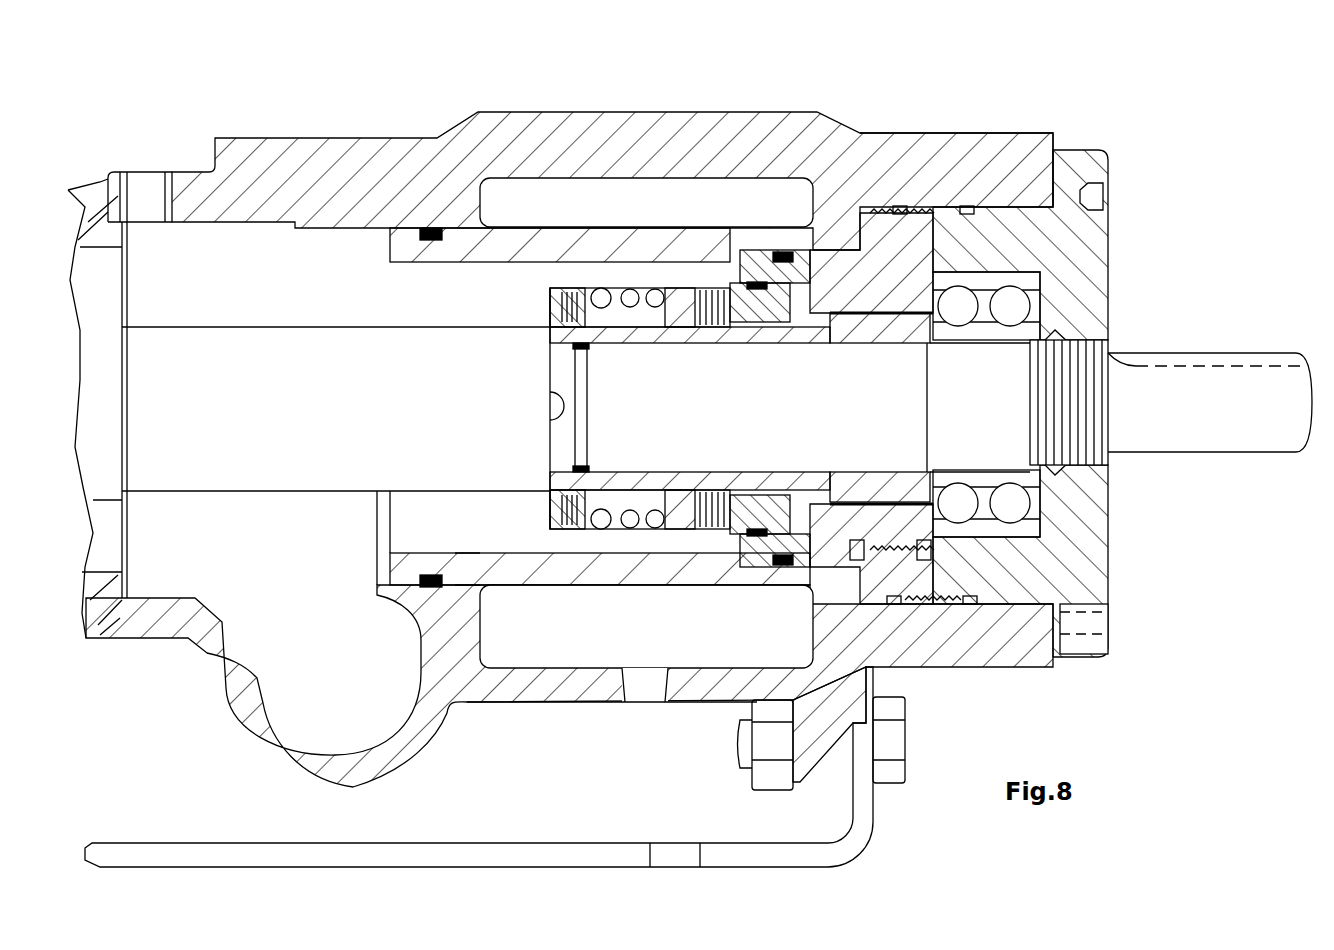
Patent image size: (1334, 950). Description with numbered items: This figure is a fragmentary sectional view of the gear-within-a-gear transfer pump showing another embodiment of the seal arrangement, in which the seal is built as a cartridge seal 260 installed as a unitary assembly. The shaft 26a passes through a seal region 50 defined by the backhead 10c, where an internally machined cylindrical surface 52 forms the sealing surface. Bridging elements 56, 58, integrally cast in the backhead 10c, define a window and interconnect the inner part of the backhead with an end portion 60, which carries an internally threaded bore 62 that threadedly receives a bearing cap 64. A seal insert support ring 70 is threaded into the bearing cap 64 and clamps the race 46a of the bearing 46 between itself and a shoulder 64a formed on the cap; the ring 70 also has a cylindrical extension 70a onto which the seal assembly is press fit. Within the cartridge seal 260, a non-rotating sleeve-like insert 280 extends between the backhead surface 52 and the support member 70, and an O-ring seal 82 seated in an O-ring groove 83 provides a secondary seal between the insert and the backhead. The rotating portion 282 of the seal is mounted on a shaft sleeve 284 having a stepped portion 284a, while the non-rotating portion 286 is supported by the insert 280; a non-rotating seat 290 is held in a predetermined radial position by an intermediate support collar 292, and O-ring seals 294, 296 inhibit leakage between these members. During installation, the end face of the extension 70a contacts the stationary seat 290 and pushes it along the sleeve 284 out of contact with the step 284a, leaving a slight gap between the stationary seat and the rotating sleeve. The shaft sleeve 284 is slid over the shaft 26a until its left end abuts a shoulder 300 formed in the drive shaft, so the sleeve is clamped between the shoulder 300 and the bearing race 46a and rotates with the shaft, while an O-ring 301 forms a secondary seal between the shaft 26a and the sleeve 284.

The backhead 10c is at (633, 90).
The shaft 26a is at (268, 429).
The bearing 46 is at (975, 478).
The bearing race 46a is at (1005, 533).
The seal region 50 is at (605, 642).
The cylindrical surface 52 is at (470, 572).
The bridging element 56 is at (718, 130).
The bridging element 58 is at (528, 685).
The end portion 60 is at (1036, 124).
The internally threaded bore 62 is at (940, 213).
The bearing cap 64 is at (1080, 235).
The shoulder 64a is at (1095, 305).
The seal insert support ring 70 is at (890, 510).
The cylindrical extension 70a is at (820, 487).
The O-ring seal 82 is at (432, 585).
The O-ring groove 83 is at (432, 228).
The cartridge seal 260 is at (512, 352).
The seal insert 280 is at (555, 240).
The rotating portion 282 is at (645, 535).
The shaft sleeve 284 is at (648, 478).
The stepped portion 284a is at (843, 320).
The non-rotating portion 286 is at (775, 470).
The non-rotating seat 290 is at (750, 300).
The intermediate support collar 292 is at (748, 560).
The O-ring seal 294 is at (795, 567).
The O-ring seal 296 is at (760, 258).
The shoulder 300 is at (555, 400).
The O-ring 301 is at (590, 465).